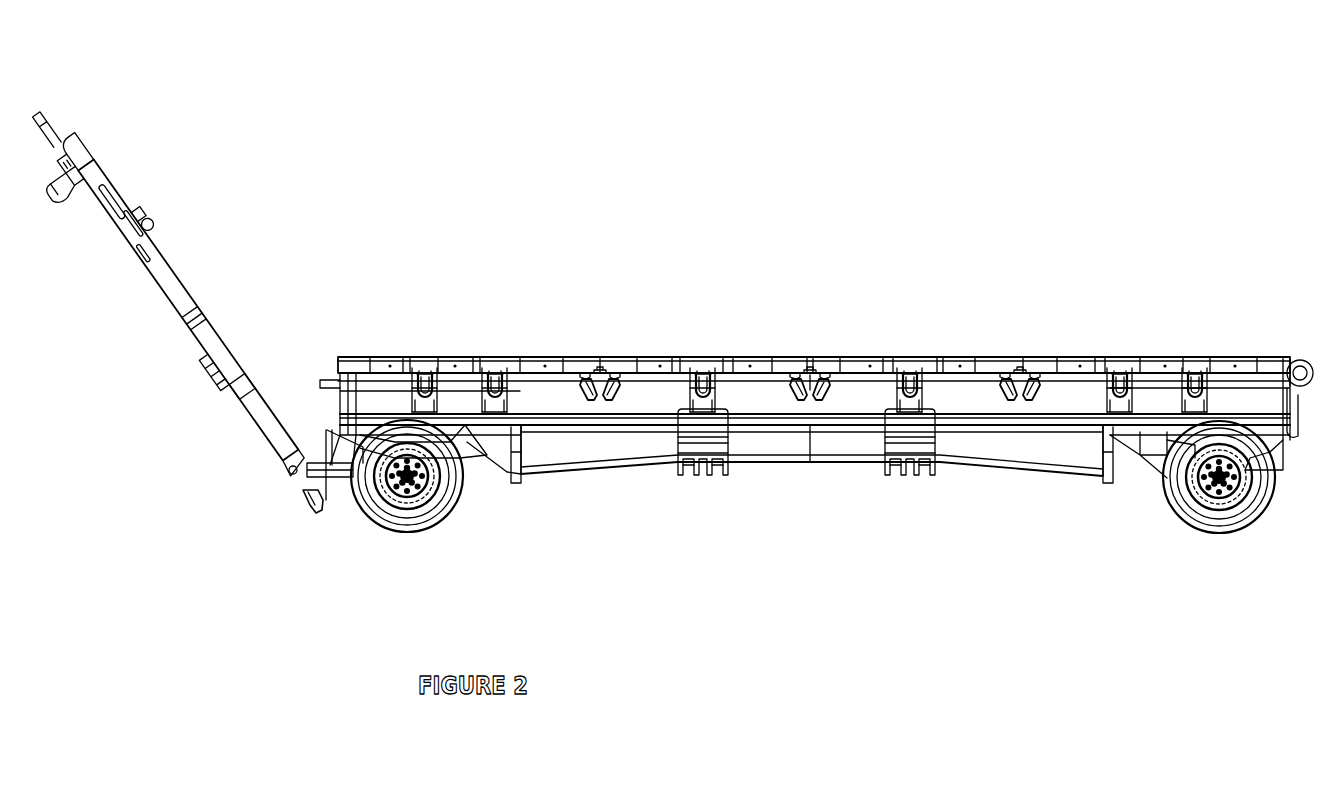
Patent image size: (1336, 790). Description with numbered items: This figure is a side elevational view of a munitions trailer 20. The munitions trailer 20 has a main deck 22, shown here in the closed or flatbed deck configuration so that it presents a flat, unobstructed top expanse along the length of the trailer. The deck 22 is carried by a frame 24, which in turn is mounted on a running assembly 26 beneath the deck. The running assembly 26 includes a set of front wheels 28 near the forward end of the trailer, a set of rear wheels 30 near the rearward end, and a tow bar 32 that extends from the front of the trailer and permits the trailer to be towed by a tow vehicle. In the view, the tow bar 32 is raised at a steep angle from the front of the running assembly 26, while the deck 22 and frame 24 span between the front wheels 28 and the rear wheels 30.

The munitions trailer 20 is at (697, 313).
The main deck 22 is at (1056, 357).
The frame 24 is at (772, 455).
The running assembly 26 is at (310, 513).
The front wheels 28 is at (417, 532).
The rear wheels 30 is at (1167, 508).
The tow bar 32 is at (148, 222).